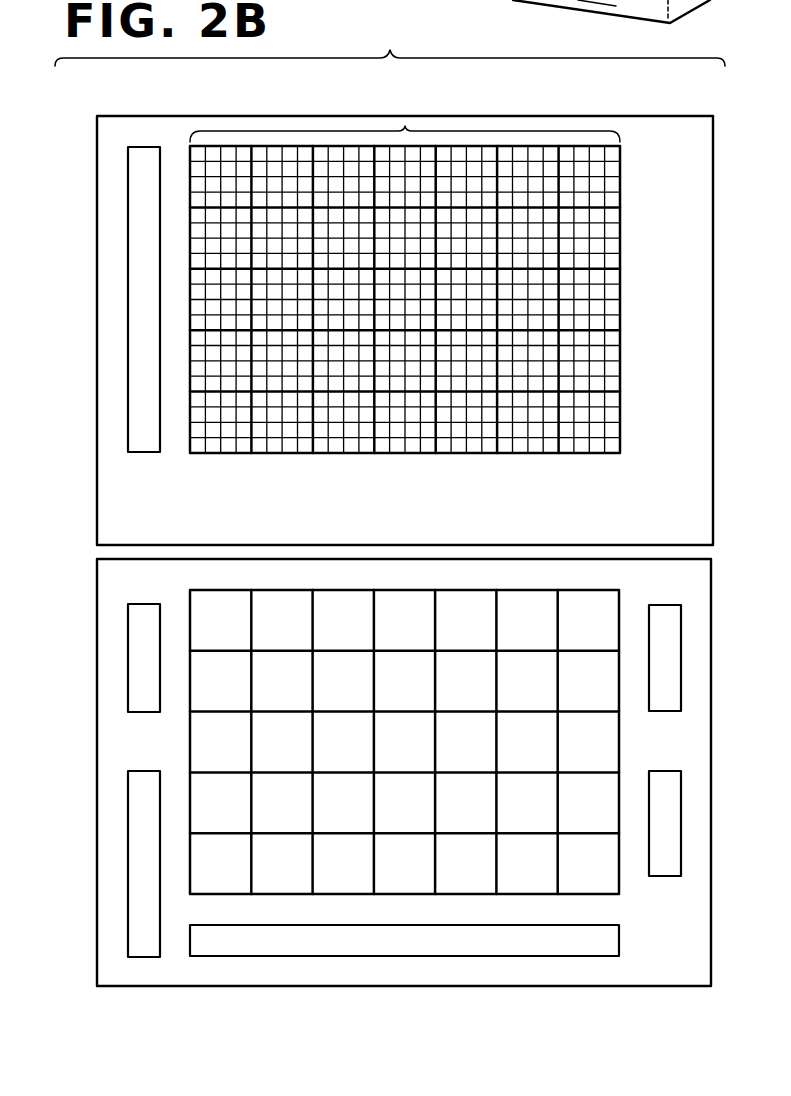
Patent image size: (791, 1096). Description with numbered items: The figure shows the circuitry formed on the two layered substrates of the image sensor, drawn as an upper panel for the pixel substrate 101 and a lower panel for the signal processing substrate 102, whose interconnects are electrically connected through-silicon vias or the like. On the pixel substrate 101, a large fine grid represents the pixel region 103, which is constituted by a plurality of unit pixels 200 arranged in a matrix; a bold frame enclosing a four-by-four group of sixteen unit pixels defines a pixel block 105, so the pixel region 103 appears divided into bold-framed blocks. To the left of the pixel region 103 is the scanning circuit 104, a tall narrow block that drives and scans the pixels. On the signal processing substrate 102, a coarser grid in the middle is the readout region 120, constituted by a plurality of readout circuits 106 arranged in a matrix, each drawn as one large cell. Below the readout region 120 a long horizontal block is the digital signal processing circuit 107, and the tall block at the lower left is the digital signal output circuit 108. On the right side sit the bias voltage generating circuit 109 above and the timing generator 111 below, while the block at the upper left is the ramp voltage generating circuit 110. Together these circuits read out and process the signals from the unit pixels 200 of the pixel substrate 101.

The pixel substrate 101 is at (97, 130).
The signal processing substrate 102 is at (97, 573).
The pixel region 103 is at (403, 128).
The scanning circuit 104 is at (128, 376).
The pixel block 105 is at (461, 453).
The readout circuit 106 is at (619, 884).
The digital signal processing circuit 107 is at (619, 936).
The digital signal output circuit 108 is at (128, 818).
The bias voltage generating circuit 109 is at (681, 667).
The ramp voltage generating circuit 110 is at (128, 668).
The timing generator 111 is at (681, 817).
The readout region 120 is at (527, 896).
The unit pixel 200 is at (276, 443).